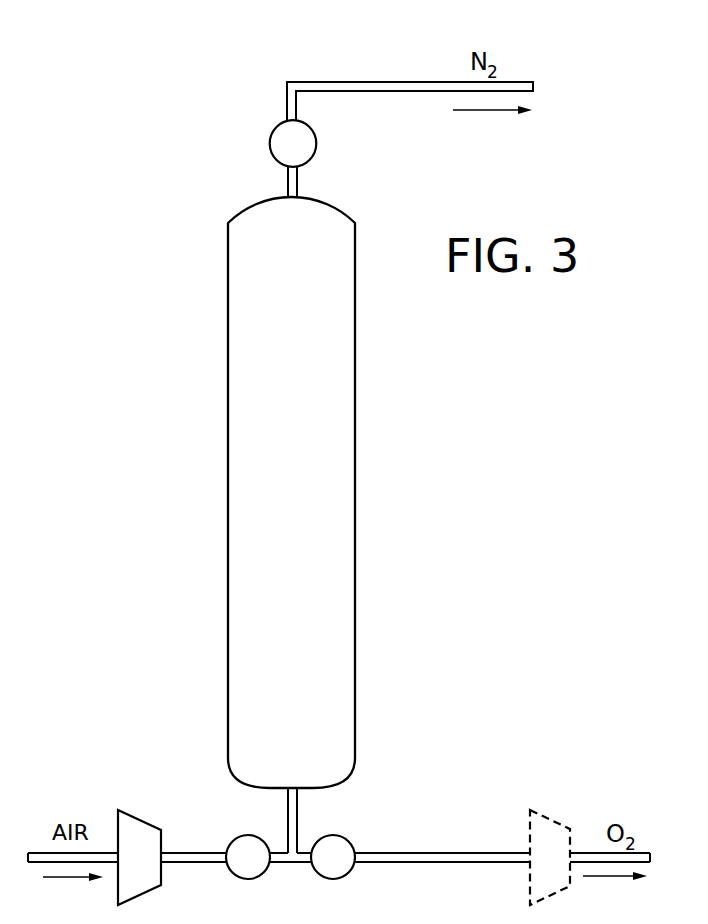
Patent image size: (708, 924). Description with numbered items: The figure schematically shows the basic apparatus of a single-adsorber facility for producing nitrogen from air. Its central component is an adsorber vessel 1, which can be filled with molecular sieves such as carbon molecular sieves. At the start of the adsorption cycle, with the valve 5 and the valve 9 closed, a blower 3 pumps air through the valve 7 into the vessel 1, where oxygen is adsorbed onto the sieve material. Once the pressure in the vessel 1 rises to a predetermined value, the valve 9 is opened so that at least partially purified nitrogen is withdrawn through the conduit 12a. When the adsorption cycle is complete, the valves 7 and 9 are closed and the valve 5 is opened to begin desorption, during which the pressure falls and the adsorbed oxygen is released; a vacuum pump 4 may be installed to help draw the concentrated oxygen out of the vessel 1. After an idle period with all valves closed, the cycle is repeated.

The adsorber vessel 1 is at (291, 492).
The blower 3 is at (139, 857).
The vacuum pump 4 is at (550, 857).
The valve 5 is at (340, 840).
The valve 7 is at (240, 840).
The valve 9 is at (276, 152).
The conduit 12a is at (397, 82).